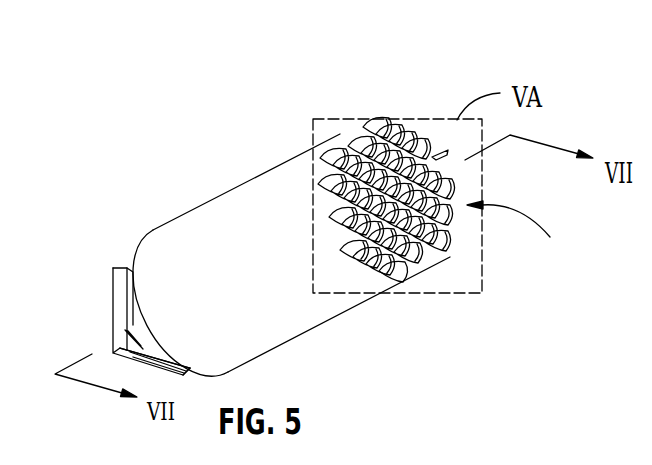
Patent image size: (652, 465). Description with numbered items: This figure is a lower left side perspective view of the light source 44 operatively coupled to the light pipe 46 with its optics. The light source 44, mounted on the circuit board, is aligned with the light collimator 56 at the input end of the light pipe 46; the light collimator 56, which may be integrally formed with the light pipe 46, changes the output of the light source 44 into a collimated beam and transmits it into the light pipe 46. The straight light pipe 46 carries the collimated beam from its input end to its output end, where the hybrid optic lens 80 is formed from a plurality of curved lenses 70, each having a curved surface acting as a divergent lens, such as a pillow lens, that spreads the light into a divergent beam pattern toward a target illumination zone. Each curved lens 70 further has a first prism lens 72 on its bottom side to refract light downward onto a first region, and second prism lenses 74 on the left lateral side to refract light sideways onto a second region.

The light source 44 is at (132, 264).
The light pipe 46 is at (217, 212).
The light collimator 56 is at (127, 304).
The curved lenses 70 is at (402, 137).
The first prism lens 72 is at (452, 188).
The second prism lens 74 is at (390, 260).
The hybrid optic lens 80 is at (520, 232).